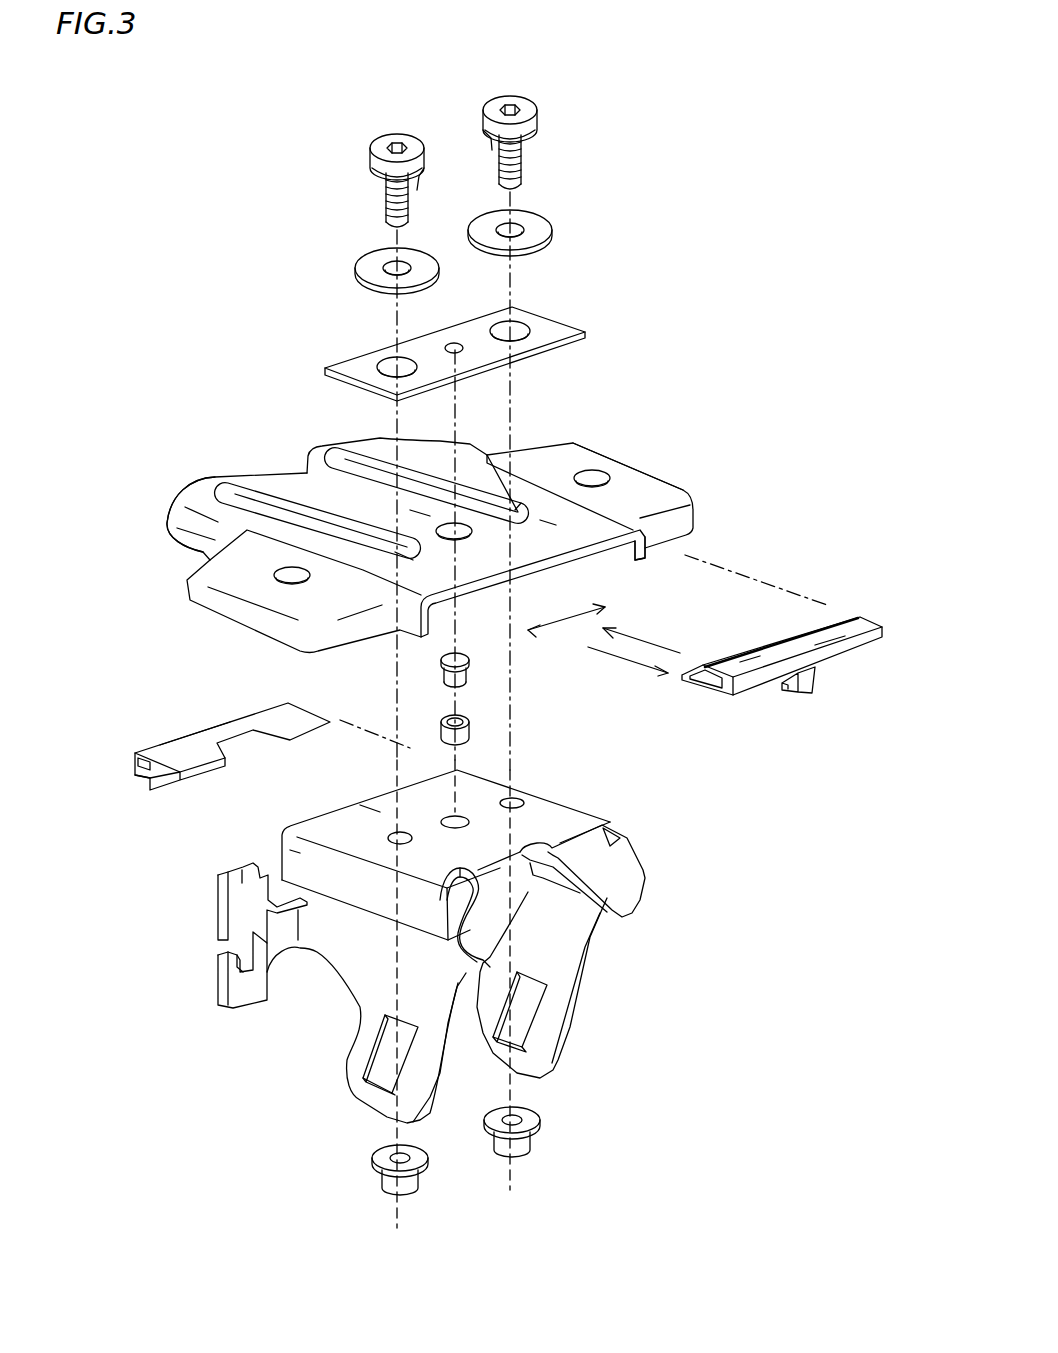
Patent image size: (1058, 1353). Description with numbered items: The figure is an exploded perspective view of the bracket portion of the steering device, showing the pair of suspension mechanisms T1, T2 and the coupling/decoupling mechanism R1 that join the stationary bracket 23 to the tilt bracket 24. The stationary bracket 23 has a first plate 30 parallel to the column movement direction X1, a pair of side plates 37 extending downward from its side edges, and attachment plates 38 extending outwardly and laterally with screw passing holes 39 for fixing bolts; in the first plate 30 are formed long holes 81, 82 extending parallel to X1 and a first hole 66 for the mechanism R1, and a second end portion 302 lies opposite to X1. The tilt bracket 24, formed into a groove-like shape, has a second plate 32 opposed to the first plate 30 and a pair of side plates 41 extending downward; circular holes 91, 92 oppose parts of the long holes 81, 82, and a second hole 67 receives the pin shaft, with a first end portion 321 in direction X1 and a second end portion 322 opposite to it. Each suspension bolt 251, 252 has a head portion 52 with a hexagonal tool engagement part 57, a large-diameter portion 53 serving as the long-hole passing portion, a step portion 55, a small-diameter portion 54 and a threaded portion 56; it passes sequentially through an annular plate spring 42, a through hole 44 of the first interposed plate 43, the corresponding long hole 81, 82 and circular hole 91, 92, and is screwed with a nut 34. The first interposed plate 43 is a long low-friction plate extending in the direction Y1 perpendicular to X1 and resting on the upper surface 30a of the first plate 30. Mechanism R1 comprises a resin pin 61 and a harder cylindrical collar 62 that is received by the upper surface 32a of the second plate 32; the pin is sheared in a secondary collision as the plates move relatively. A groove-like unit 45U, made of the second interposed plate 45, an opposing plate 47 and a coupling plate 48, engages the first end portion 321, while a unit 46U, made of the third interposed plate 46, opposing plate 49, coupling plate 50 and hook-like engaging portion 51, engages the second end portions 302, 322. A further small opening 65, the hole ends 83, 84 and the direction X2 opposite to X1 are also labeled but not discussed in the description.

The suspension mechanism T1 is at (378, 127).
The suspension mechanism T2 is at (492, 88).
The head portion 52 is at (370, 141).
The large-diameter portion 53 is at (372, 165).
The small-diameter portion 54 is at (386, 180).
The step portion 55 is at (411, 175).
The threaded portion 56 is at (388, 212).
The tool engagement part 57 is at (398, 140).
The suspension bolt 251 is at (415, 130).
The suspension bolt 252 is at (527, 92).
The plate spring 42 is at (365, 262).
The first interposed plate 43 is at (556, 325).
The through hole 44 is at (390, 362).
The pin hole of cover plate 65 is at (457, 344).
The first plate 30 is at (330, 470).
The upper surface of first plate 30a is at (420, 513).
The side plates 37 is at (170, 527).
The attachment plates 38 is at (238, 563).
The screw passing holes 39 is at (293, 575).
The long hole 81 is at (263, 505).
The long hole 82 is at (365, 462).
The slot end 83 is at (383, 545).
The slot end 84 is at (522, 470).
The first hole 66 is at (458, 527).
The stationary bracket 23 is at (546, 512).
The second end portion 302 is at (480, 590).
The direction Y1 is at (558, 615).
The column movement direction X1 is at (652, 640).
The rearward direction X2 is at (625, 672).
The third interposed plate 46 is at (695, 672).
The unit 46U is at (852, 626).
The opposing plate 49 is at (752, 658).
The coupling plate 50 is at (845, 644).
The engaging portion 51 is at (800, 684).
The second interposed plate 45 is at (200, 740).
The groove-like unit 45U is at (180, 745).
The opposing plate 47 is at (138, 780).
The coupling plate 48 is at (132, 758).
The resin pin 61 is at (468, 675).
The cylindrical collar 62 is at (468, 727).
The coupling/decoupling mechanism R1 is at (566, 655).
The tilt bracket 24 is at (584, 800).
The second plate 32 is at (538, 820).
The upper surface of second plate 32a is at (372, 812).
The first end portion 321 is at (313, 828).
The second end portion 322 is at (560, 843).
The circular hole 91 is at (405, 835).
The circular hole 92 is at (503, 806).
The second hole 67 is at (460, 815).
The side plates 41 is at (363, 948).
The nut 34 is at (415, 1178).